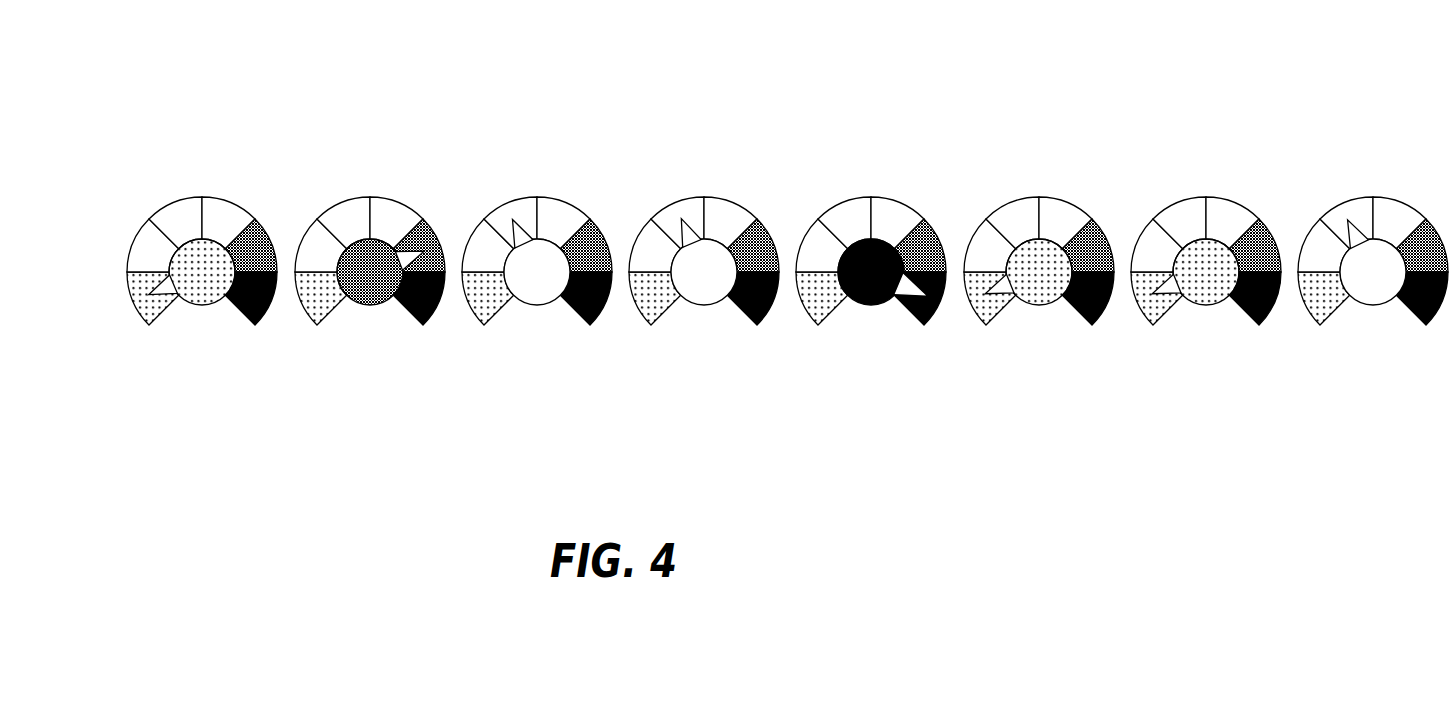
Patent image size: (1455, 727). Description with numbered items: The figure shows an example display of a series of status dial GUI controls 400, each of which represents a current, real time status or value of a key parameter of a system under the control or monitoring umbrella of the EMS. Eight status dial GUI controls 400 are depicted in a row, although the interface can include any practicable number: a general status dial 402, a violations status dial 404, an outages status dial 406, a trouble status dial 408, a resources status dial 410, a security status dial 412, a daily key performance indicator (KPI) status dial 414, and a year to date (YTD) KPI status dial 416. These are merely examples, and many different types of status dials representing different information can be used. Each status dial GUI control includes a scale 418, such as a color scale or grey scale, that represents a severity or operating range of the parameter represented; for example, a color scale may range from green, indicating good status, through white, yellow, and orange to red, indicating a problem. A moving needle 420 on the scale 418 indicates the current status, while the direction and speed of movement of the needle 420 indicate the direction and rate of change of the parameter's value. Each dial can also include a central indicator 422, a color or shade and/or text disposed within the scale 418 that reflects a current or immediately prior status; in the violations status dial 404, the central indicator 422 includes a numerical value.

The status dial GUI controls 400 is at (590, 86).
The general status dial 402 is at (173, 198).
The violations status dial 404 is at (327, 194).
The outages status dial 406 is at (492, 194).
The trouble status dial 408 is at (657, 202).
The resources status dial 410 is at (828, 198).
The security status dial 412 is at (991, 197).
The daily key performance indicator (KPI) status dial 414 is at (1168, 200).
The year to date (YTD) KPI status dial 416 is at (1333, 198).
The scale 418 is at (202, 244).
The needle 420 is at (139, 306).
The central indicator 422 is at (165, 260).